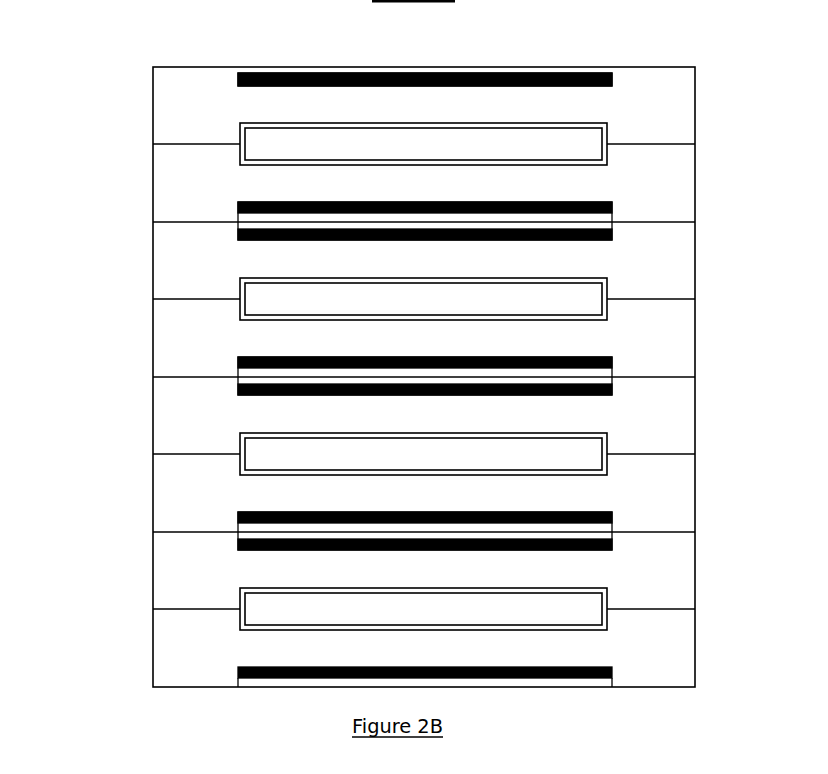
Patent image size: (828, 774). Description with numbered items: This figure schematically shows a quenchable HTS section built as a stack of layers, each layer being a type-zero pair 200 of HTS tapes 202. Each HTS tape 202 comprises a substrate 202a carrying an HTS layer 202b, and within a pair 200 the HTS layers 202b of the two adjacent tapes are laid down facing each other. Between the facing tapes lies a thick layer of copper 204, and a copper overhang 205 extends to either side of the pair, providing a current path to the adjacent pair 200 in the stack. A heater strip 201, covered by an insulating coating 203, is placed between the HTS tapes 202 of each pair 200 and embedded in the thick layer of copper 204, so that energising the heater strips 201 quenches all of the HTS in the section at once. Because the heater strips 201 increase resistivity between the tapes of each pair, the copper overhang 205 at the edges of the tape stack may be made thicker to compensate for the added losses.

The type-0 pair 200 is at (396, 367).
The heater strip 201 is at (592, 143).
The HTS tape 202 is at (413, 47).
The substrate 202a is at (579, 68).
The HTS layer 202b is at (624, 81).
The insulating coating 203 is at (616, 168).
The thick layer of copper 204 is at (641, 206).
The copper overhang 205 is at (173, 179).